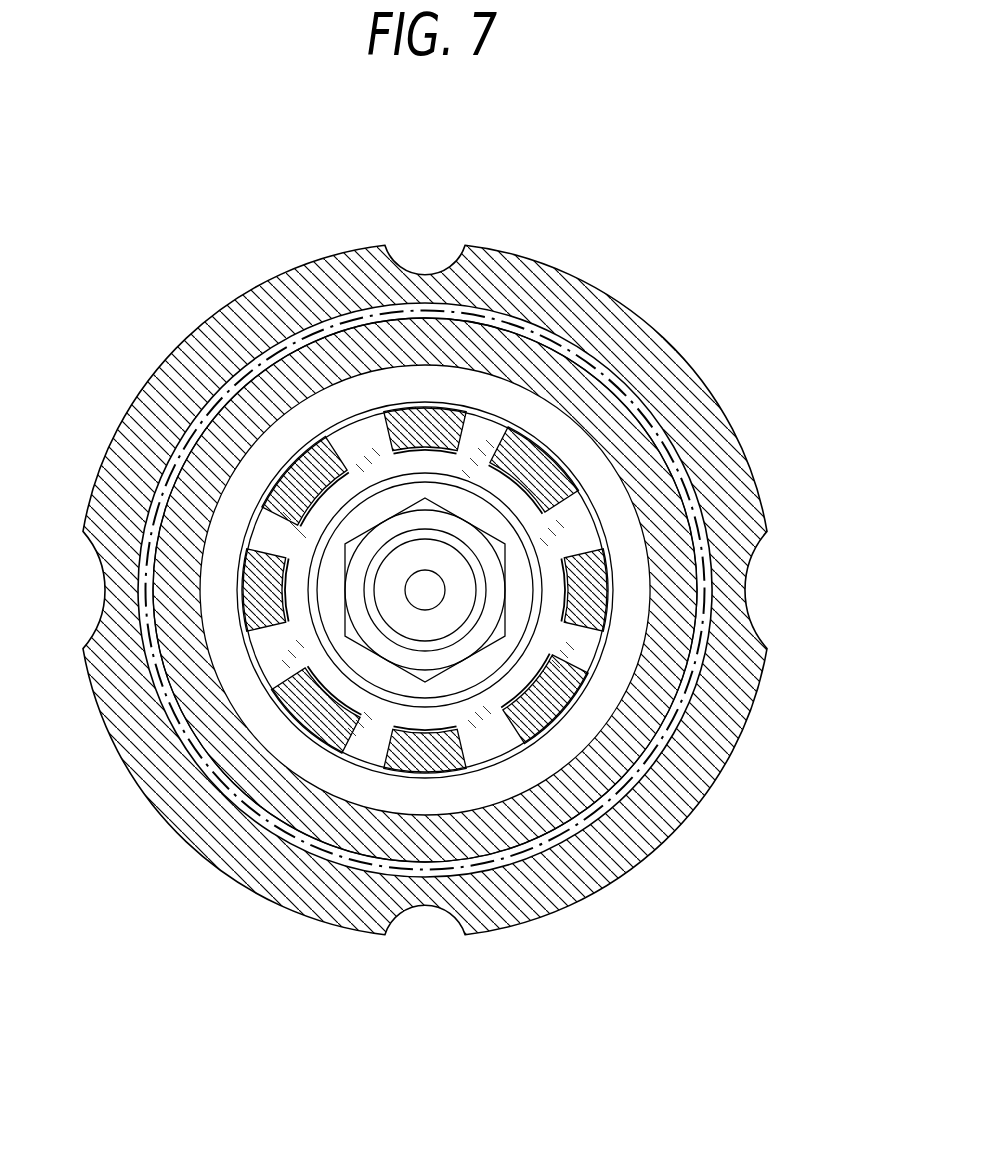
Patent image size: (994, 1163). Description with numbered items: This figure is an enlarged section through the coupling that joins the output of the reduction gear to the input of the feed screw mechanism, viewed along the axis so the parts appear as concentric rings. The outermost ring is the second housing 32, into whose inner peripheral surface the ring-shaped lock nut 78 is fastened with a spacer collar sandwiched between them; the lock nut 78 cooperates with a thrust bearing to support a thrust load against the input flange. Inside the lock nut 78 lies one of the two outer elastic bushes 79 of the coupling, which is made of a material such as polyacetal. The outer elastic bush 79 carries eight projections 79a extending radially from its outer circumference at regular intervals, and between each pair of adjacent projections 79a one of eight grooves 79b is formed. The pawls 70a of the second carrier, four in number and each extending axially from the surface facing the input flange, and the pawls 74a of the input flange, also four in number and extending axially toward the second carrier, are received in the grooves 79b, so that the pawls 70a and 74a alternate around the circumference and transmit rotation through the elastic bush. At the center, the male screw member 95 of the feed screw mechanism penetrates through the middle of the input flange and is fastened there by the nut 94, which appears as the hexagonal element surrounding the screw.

The second housing 32 is at (602, 281).
The pawls 70a is at (262, 338).
The pawls 74a is at (413, 420).
The lock nut 78 is at (213, 457).
The outer elastic bushes 79 is at (614, 519).
The projections 79a is at (300, 470).
The grooves 79b is at (437, 447).
The nut 94 is at (368, 570).
The male screw member 95 is at (443, 563).